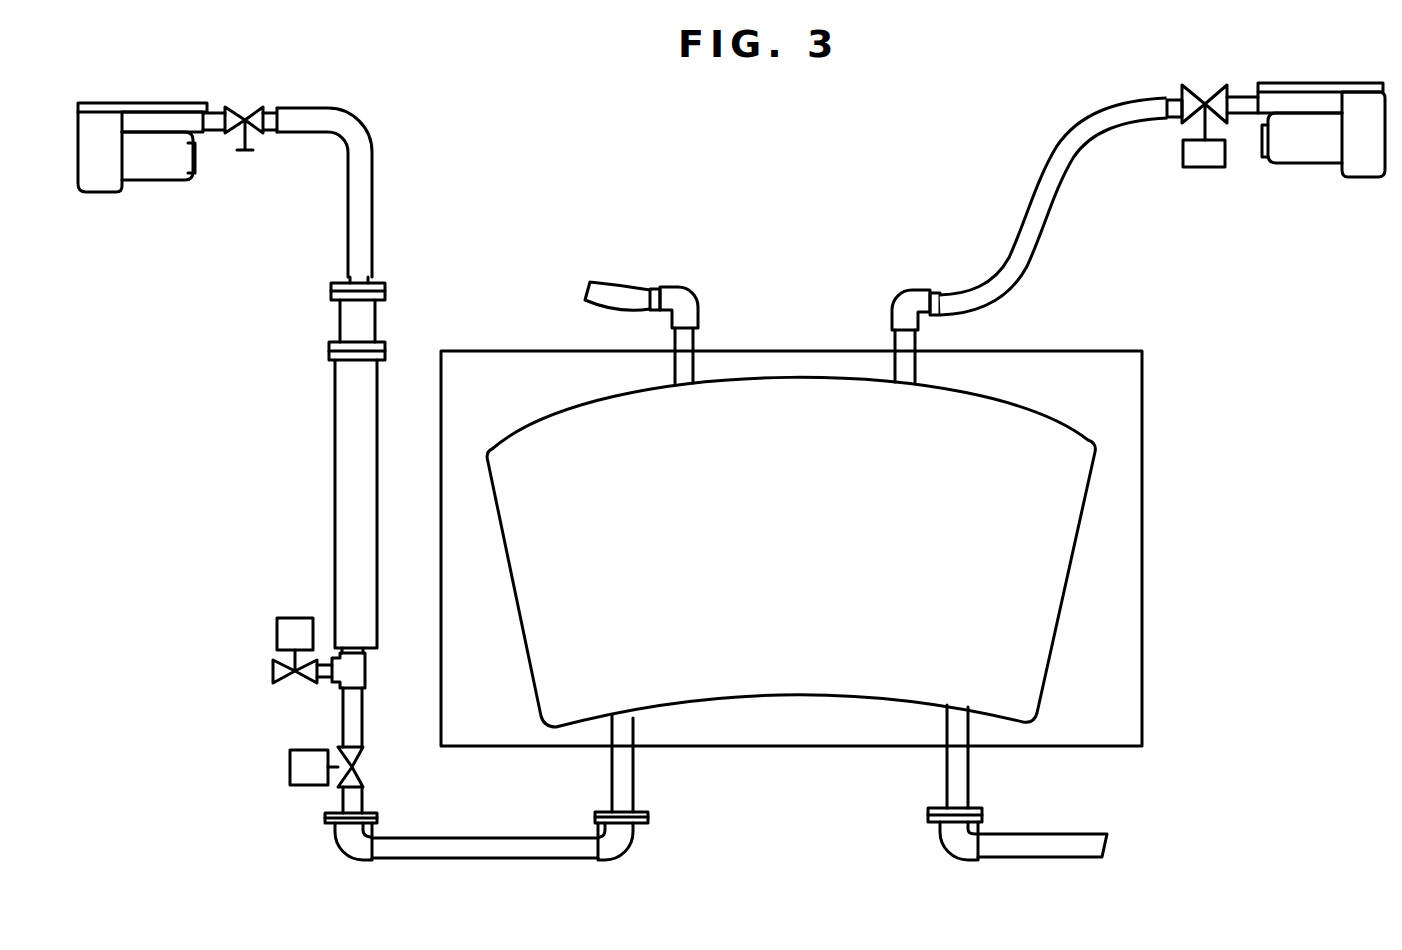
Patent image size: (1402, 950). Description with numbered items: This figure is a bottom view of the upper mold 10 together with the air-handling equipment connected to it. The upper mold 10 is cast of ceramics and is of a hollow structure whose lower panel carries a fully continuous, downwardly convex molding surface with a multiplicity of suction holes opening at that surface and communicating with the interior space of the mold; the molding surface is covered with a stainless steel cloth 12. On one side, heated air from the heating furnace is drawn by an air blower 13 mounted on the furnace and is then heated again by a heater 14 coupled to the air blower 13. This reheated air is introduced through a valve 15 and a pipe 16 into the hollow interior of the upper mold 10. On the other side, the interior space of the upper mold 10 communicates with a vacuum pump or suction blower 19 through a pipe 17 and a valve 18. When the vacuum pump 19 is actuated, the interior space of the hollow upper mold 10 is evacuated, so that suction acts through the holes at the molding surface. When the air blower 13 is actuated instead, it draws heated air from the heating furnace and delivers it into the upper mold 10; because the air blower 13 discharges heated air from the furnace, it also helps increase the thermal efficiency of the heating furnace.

The upper mold 10 is at (822, 273).
The stainless steel cloth 12 is at (1003, 625).
The air blower 13 is at (152, 175).
The heater 14 is at (340, 463).
The valve 15 is at (310, 777).
The pipe 16 is at (525, 848).
The pipe 17 is at (627, 290).
The valve 18 is at (1208, 158).
The vacuum pump or suction blower 19 is at (1313, 153).